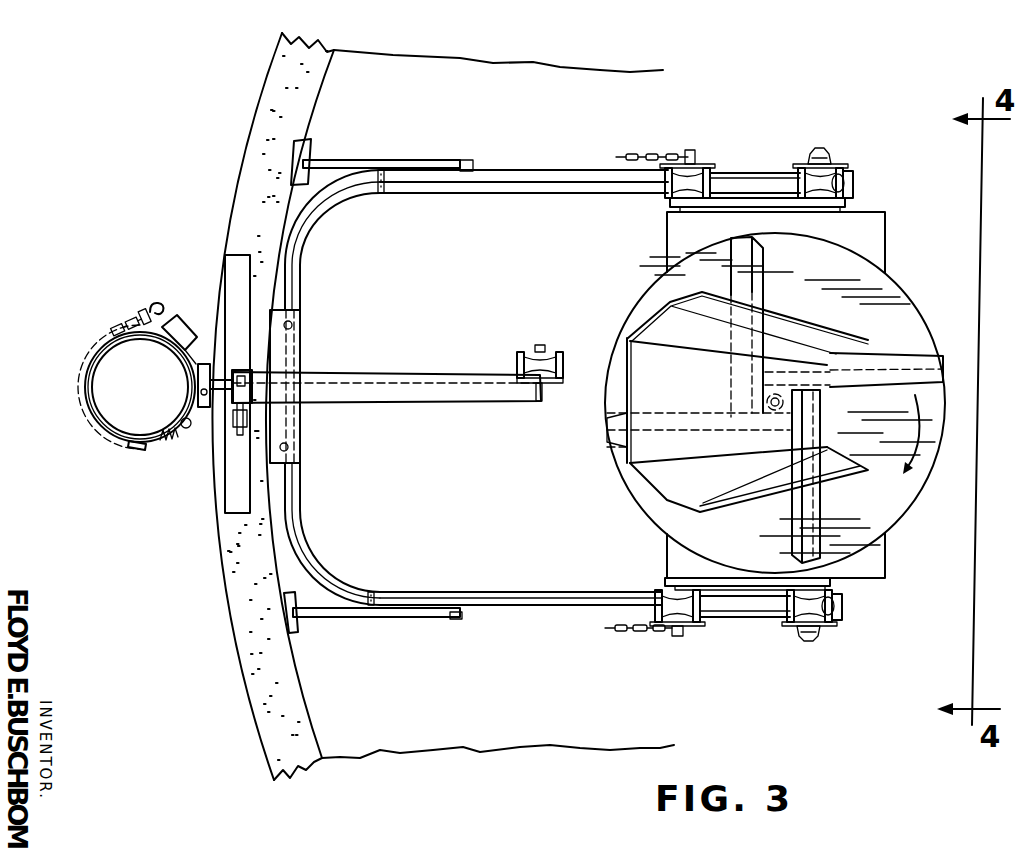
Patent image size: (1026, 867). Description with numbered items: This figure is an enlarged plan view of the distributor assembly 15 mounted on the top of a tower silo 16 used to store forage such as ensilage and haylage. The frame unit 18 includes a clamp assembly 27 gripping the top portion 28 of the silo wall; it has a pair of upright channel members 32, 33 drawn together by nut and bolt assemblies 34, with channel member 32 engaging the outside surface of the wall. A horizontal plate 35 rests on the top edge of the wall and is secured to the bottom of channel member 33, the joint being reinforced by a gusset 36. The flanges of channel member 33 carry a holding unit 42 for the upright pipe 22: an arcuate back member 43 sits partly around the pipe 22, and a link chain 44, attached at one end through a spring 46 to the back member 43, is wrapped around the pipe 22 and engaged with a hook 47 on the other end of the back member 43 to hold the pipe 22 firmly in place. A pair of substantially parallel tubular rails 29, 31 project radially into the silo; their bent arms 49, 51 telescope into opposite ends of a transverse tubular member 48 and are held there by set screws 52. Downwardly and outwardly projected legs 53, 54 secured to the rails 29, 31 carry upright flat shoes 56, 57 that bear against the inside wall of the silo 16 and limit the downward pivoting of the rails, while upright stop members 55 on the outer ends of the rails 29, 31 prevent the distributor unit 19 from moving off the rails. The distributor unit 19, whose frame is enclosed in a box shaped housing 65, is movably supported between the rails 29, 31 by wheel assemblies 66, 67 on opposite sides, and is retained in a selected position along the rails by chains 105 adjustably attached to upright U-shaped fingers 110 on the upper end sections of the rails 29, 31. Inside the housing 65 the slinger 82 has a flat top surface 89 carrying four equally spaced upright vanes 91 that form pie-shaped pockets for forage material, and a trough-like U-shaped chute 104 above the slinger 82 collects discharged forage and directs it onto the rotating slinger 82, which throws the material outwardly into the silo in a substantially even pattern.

The distributor assembly 15 is at (876, 128).
The tower silo 16 is at (240, 150).
The frame unit 18 is at (571, 164).
The distributor unit 19 is at (908, 273).
The upright pipe 22 is at (82, 381).
The clamp assembly 27 is at (203, 462).
The top portion of the silo wall 28 is at (237, 578).
The rail 29 is at (500, 186).
The rail 31 is at (558, 590).
The upright channel member 32 is at (205, 362).
The upright channel member 33 is at (250, 410).
The nut and bolt assemblies 34 is at (222, 392).
The horizontal plate 35 is at (237, 262).
The gusset 36 is at (245, 426).
The holding unit 42 is at (126, 318).
The arcuate back member 43 is at (200, 392).
The link chain 44 is at (133, 446).
The spring 46 is at (168, 442).
The hook 47 is at (158, 300).
The tubular member 48 is at (301, 338).
The bent arm 49 is at (296, 279).
The bent arm 51 is at (298, 489).
The set screws 52 is at (291, 322).
The leg 53 is at (355, 160).
The leg 54 is at (375, 617).
The stop members 55 is at (854, 178).
The flat shoe 56 is at (309, 147).
The flat shoe 57 is at (296, 630).
The box shaped housing 65 is at (888, 228).
The wheel assembly 66 is at (749, 164).
The wheel assembly 67 is at (731, 627).
The slinger 82 is at (905, 496).
The flat top surface 89 is at (838, 476).
The upright vanes 91 is at (920, 362).
The chute 104 is at (666, 477).
The chains 105 is at (650, 154).
The U-shaped fingers 110 is at (384, 185).